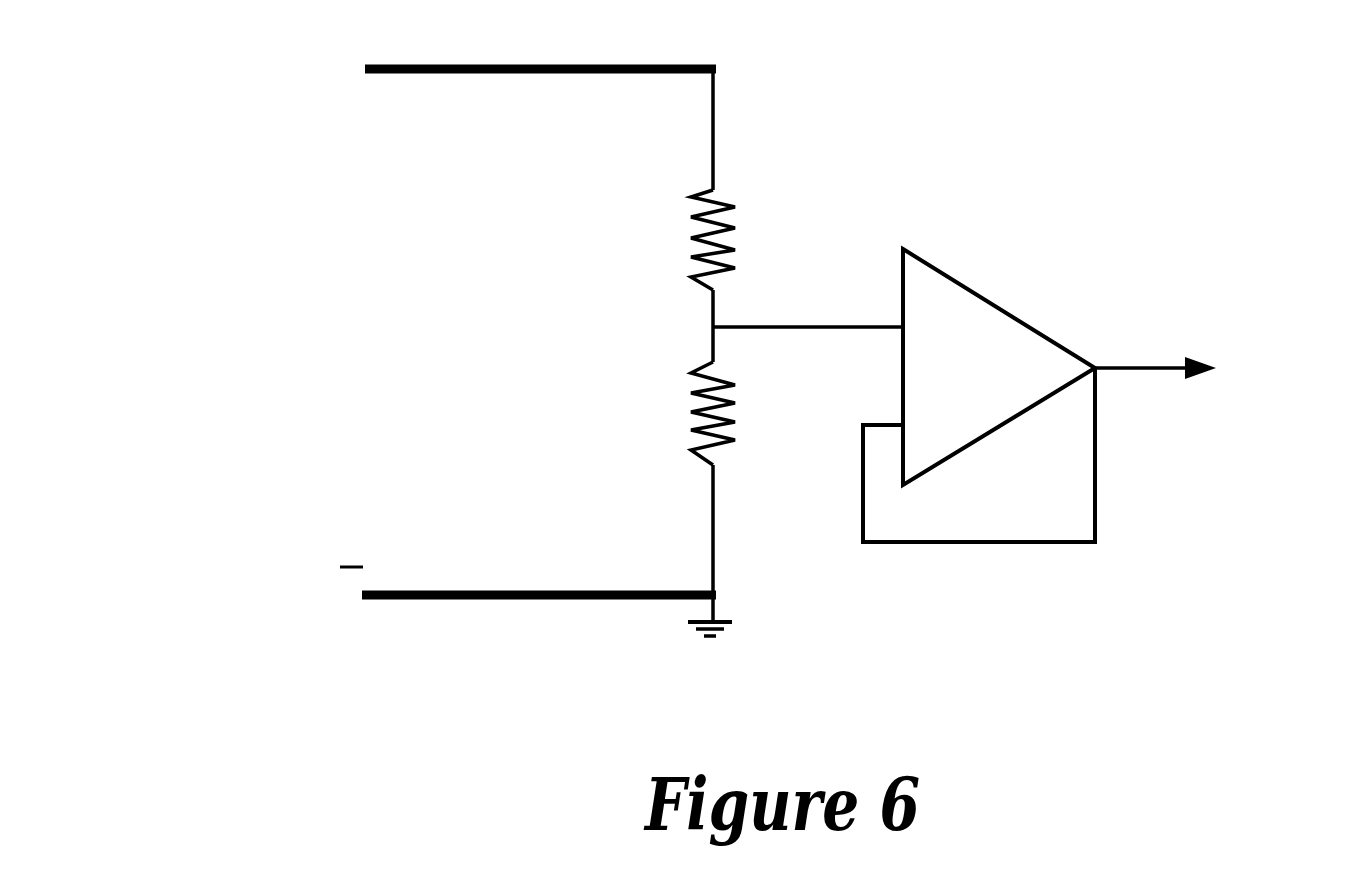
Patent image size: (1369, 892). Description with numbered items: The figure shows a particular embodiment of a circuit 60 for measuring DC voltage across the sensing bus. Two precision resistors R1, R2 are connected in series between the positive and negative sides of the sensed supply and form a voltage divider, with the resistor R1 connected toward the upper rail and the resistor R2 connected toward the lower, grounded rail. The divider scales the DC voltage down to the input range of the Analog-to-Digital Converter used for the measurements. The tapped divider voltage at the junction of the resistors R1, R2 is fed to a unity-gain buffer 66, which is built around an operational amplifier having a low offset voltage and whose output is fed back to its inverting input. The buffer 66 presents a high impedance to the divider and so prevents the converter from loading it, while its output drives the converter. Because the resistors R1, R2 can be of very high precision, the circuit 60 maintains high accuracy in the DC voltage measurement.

The circuit 60 is at (737, 352).
The unity-gain buffer 66 is at (1036, 355).
The precision resistor R1 is at (680, 240).
The precision resistor R2 is at (680, 413).